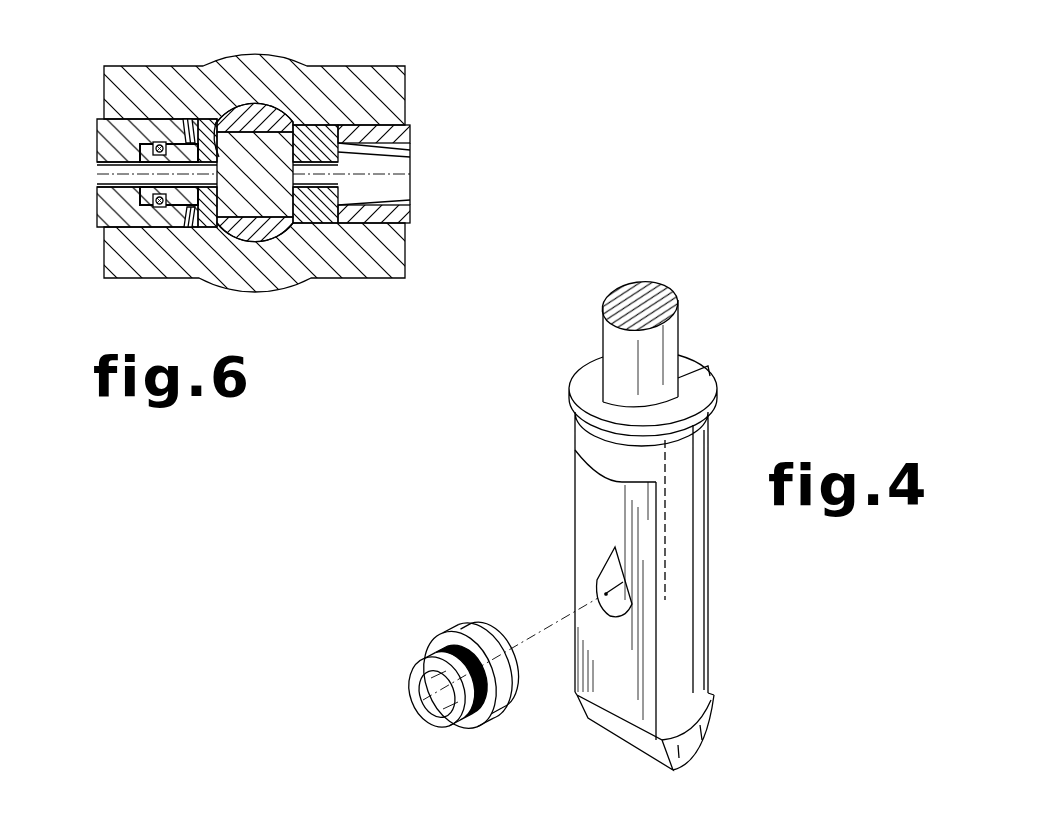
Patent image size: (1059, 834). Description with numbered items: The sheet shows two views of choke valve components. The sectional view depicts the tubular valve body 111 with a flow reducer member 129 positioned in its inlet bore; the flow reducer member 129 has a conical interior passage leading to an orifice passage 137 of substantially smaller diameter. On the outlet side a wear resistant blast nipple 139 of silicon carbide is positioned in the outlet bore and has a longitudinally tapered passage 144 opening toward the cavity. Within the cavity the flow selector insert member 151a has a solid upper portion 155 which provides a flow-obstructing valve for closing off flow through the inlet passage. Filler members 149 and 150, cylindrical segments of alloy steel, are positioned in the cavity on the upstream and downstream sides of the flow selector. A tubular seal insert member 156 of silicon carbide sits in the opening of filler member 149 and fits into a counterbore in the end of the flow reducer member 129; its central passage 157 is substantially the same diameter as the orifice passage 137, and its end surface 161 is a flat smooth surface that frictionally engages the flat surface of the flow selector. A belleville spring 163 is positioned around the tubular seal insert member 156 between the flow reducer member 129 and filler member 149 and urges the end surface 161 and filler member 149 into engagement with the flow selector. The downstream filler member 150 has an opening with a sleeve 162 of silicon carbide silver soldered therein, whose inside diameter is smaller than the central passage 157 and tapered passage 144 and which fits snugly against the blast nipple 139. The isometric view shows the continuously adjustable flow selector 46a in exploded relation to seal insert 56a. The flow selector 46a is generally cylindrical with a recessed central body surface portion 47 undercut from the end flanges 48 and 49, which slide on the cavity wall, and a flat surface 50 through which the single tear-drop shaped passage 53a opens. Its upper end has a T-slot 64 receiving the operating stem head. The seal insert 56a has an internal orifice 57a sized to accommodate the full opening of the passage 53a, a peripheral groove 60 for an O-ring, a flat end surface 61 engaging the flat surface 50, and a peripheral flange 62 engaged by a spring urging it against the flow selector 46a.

In FIG. 6, the tubular valve body 111 is at (220, 283).
In FIG. 6, the flow reducer member 129 is at (103, 147).
In FIG. 6, the orifice passage 137 is at (108, 184).
In FIG. 6, the blast nipple 139 is at (397, 135).
In FIG. 6, the tapered passage 144 is at (365, 205).
In FIG. 6, the filler member 149 is at (172, 143).
In FIG. 6, the filler member 150 is at (324, 122).
In FIG. 6, the flow selector insert member 151a is at (252, 248).
In FIG. 6, the upper portion of insert member 155 is at (268, 148).
In FIG. 6, the tubular seal insert member 156 is at (186, 125).
In FIG. 6, the central passage 157 is at (138, 148).
In FIG. 6, the end surface of seal member 161 is at (232, 108).
In FIG. 6, the sleeve 162 is at (315, 210).
In FIG. 6, the belleville spring 163 is at (185, 220).
In FIG. 4, the flow selector 46a is at (555, 478).
In FIG. 4, the central body surface portion 47 is at (700, 592).
In FIG. 4, the end flange 48 is at (708, 424).
In FIG. 4, the end flange 49 is at (710, 730).
In FIG. 4, the flat surface 50 is at (596, 512).
In FIG. 4, the single passage 53a is at (600, 586).
In FIG. 4, the seal insert 56a is at (420, 645).
In FIG. 4, the internal orifice 57a is at (438, 698).
In FIG. 4, the peripheral groove 60 is at (468, 718).
In FIG. 4, the end surface 61 is at (493, 626).
In FIG. 4, the peripheral flange 62 is at (507, 700).
In FIG. 4, the T-slot 64 is at (690, 372).